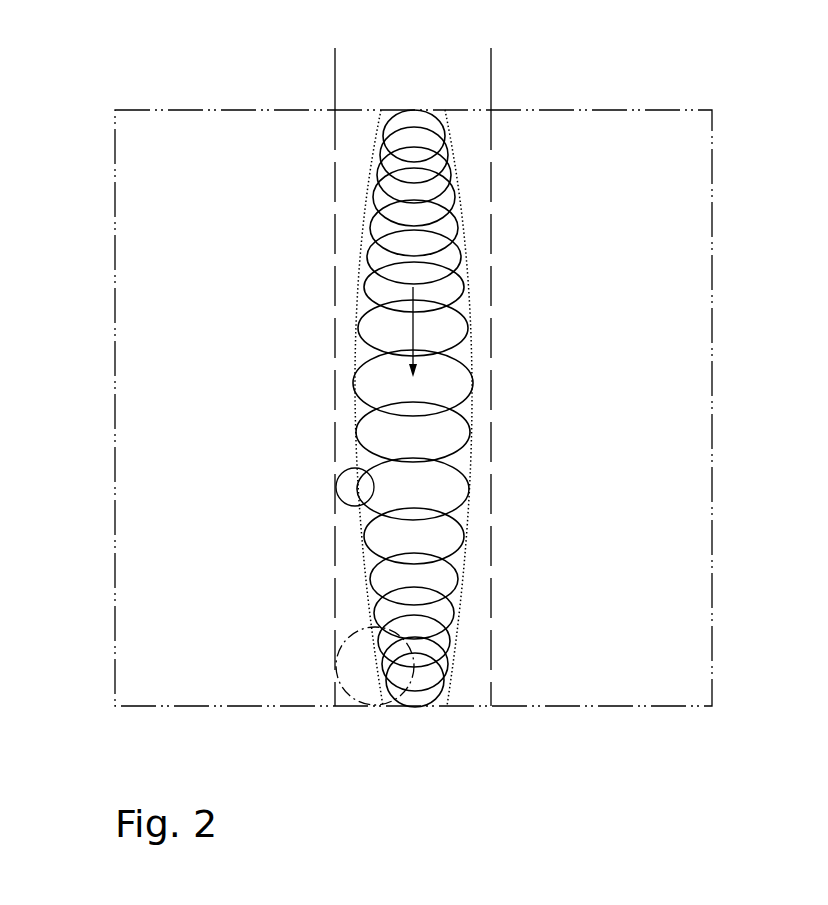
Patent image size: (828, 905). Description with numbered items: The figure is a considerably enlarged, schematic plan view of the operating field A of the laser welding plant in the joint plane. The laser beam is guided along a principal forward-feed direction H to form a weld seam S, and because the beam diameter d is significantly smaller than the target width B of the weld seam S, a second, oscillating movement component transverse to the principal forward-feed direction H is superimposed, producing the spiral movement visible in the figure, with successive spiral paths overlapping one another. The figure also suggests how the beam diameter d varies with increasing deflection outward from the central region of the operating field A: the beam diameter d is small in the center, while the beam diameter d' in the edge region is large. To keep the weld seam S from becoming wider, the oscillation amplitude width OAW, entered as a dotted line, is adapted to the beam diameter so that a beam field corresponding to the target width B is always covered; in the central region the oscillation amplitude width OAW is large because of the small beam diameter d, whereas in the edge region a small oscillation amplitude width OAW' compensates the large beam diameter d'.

The operating field A is at (712, 222).
The target width B is at (335, 56).
The weld seam S is at (335, 710).
The principal forward-feed direction H is at (603, 332).
The oscillation amplitude width OAW is at (446, 377).
The beam diameter d is at (354, 482).
The enlarged beam diameter d' is at (376, 666).
The small oscillation amplitude width OAW' is at (462, 674).